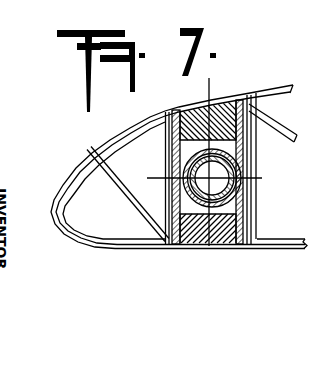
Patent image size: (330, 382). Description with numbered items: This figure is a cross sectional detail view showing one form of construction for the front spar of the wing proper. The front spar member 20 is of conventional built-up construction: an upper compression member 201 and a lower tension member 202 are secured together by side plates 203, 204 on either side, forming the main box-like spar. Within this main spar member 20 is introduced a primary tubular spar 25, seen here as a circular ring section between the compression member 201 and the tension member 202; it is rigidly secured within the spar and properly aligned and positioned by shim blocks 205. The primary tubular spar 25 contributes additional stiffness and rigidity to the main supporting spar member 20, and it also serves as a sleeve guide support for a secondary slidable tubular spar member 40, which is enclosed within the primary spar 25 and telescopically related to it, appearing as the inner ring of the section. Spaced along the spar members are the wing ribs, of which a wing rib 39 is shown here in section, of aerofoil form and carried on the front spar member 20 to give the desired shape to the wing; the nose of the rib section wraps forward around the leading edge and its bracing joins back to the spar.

The front spar member 20 is at (238, 236).
The primary tubular spar 25 is at (242, 171).
The wing rib 39 is at (100, 243).
The secondary slidable tubular spar member 40 is at (232, 198).
The compression member 201 is at (222, 114).
The tension member 202 is at (214, 228).
The side plate 203 is at (166, 162).
The side plate 204 is at (243, 229).
The shim block 205 is at (190, 214).